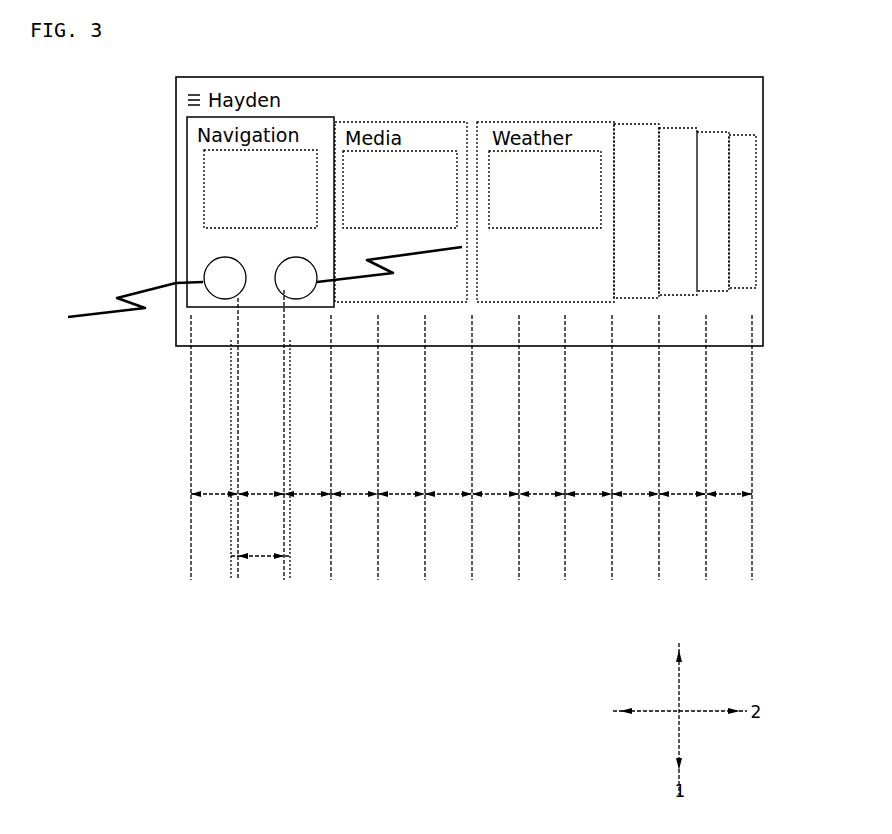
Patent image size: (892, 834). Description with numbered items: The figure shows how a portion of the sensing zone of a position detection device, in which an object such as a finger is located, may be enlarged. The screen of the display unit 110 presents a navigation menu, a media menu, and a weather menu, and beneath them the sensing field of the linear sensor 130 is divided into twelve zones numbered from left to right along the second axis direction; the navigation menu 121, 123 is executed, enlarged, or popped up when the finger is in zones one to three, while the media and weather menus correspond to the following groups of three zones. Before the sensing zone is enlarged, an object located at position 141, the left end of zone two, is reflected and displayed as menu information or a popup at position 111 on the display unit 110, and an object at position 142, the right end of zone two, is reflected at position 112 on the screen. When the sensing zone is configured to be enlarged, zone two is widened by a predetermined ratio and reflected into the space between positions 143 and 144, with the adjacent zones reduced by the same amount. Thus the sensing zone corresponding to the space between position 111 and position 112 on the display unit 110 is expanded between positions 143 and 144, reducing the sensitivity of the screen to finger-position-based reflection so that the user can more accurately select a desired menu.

The display unit 110 is at (176, 128).
The position 111 is at (238, 298).
The position 112 is at (284, 300).
The navigation menu 121 is at (105, 306).
The navigation menu 123 is at (415, 258).
The linear sensor 130 is at (176, 333).
The position 141 is at (237, 580).
The position 142 is at (284, 580).
The position 143 is at (230, 580).
The position 144 is at (290, 580).